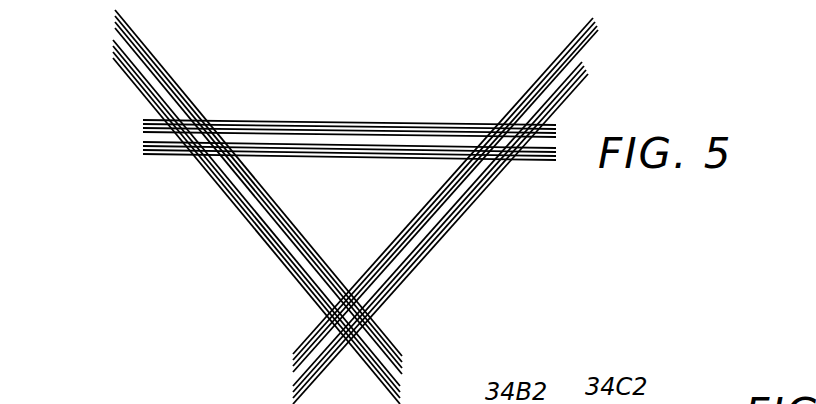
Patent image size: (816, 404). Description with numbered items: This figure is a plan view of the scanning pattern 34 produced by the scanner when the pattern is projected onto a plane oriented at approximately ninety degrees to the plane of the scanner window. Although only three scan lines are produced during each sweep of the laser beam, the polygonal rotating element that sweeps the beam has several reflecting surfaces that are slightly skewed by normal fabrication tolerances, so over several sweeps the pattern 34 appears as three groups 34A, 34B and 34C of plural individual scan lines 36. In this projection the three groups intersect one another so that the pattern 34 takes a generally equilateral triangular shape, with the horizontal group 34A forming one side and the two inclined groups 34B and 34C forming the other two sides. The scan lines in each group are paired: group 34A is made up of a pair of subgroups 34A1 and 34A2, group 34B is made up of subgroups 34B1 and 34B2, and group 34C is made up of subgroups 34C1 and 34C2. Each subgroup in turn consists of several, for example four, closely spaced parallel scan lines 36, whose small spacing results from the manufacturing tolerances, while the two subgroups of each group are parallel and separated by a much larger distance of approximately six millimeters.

The scanning pattern 34 is at (386, 218).
The first group of scan lines 34A is at (400, 142).
The first subgroup of group 34A 34A1 is at (351, 112).
The second subgroup of group 34A 34A2 is at (337, 160).
The second group of scan lines 34B is at (274, 245).
The first subgroup of group 34B 34B1 is at (128, 91).
The second subgroup of group 34B 34B2 is at (174, 53).
The third group of scan lines 34C is at (472, 168).
The first subgroup of group 34C 34C1 is at (577, 84).
The second subgroup of group 34C 34C2 is at (518, 80).
The scan lines 36 is at (302, 152).